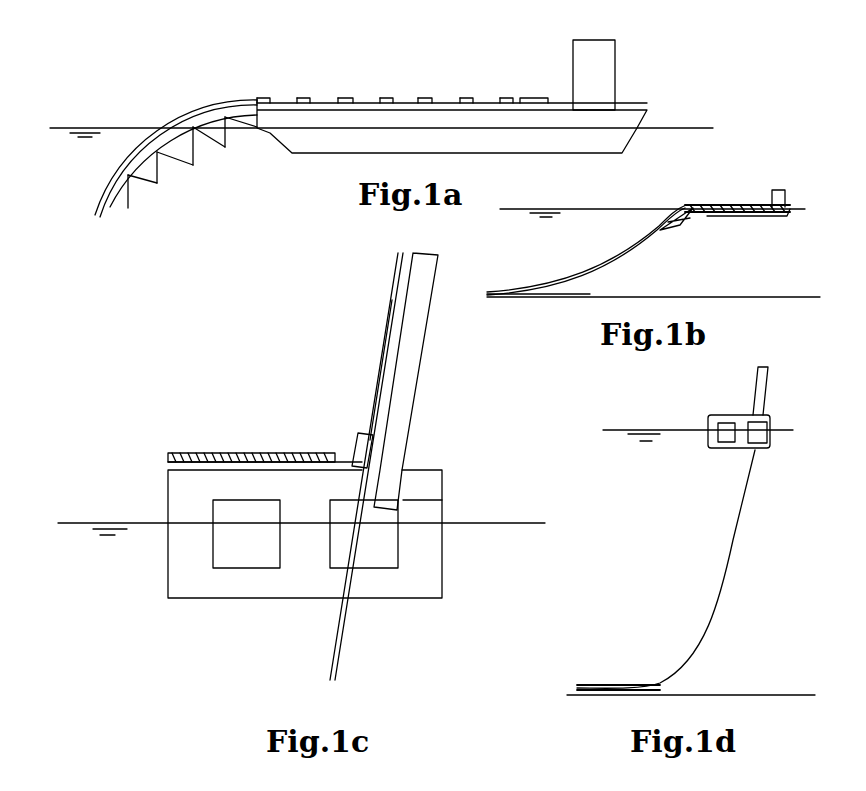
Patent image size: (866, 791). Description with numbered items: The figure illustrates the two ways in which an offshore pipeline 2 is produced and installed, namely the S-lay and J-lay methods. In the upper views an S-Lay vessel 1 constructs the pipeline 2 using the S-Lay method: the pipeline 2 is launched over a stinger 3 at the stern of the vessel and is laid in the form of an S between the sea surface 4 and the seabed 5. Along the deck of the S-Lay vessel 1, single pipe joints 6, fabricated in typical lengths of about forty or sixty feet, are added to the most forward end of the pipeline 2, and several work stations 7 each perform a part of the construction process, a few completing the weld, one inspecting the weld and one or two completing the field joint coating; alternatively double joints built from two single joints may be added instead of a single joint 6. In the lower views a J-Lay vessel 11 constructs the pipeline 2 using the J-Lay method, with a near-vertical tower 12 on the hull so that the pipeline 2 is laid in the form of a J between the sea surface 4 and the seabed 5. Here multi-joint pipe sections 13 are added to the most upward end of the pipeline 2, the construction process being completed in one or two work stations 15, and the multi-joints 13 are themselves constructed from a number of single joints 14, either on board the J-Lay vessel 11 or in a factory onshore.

In FIG. 1A, the S-Lay vessel 1 is at (640, 86).
In FIG. 1B, the S-Lay vessel 1 is at (796, 183).
In FIG. 1A, the pipeline 2 is at (203, 110).
In FIG. 1B, the pipeline 2 is at (593, 275).
In FIG. 1C, the pipeline 2 is at (333, 655).
In FIG. 1D, the pipeline 2 is at (713, 633).
In FIG. 1A, the stinger 3 is at (187, 167).
In FIG. 1B, the stinger 3 is at (677, 225).
In FIG. 1B, the sea surface 4 is at (635, 208).
In FIG. 1D, the sea surface 4 is at (620, 425).
In FIG. 1B, the seabed 5 is at (725, 295).
In FIG. 1D, the seabed 5 is at (755, 692).
In FIG. 1A, the single pipe joint 6 is at (537, 97).
In FIG. 1A, the work stations 7 is at (506, 92).
In FIG. 1C, the J-Lay vessel 11 is at (455, 441).
In FIG. 1D, the J-Lay vessel 11 is at (782, 402).
In FIG. 1C, the mast 12 is at (424, 362).
In FIG. 1C, the multi-joint pipe section 13 is at (233, 452).
In FIG. 1C, the single joints 14 is at (183, 448).
In FIG. 1C, the work stations 15 is at (360, 435).